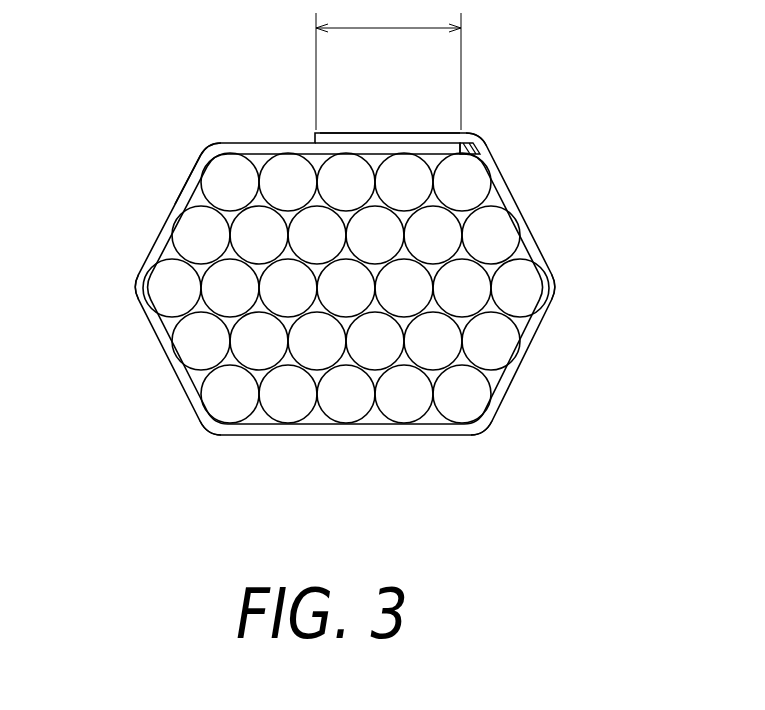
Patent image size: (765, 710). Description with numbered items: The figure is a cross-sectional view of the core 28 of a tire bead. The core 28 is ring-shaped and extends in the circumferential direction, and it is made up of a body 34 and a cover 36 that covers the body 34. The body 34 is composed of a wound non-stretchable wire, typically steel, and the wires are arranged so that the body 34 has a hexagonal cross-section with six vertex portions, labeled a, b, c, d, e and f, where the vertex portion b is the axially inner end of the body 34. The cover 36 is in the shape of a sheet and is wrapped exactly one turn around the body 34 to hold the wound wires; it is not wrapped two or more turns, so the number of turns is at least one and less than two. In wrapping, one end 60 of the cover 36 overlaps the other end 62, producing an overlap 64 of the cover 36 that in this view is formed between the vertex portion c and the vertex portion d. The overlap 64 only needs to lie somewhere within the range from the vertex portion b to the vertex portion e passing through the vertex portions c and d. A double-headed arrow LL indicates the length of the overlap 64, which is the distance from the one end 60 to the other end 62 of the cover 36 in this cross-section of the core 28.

The core 28 is at (548, 203).
The body 34 is at (166, 221).
The cover 36 is at (187, 182).
The one end 60 is at (478, 142).
The other end 62 is at (311, 139).
The overlap 64 is at (385, 131).
The length of the overlap LL is at (388, 69).
The vertex portion a is at (207, 432).
The vertex portion b is at (140, 288).
The vertex portion c is at (206, 150).
The vertex portion d is at (480, 150).
The vertex portion e is at (560, 290).
The vertex portion f is at (479, 431).